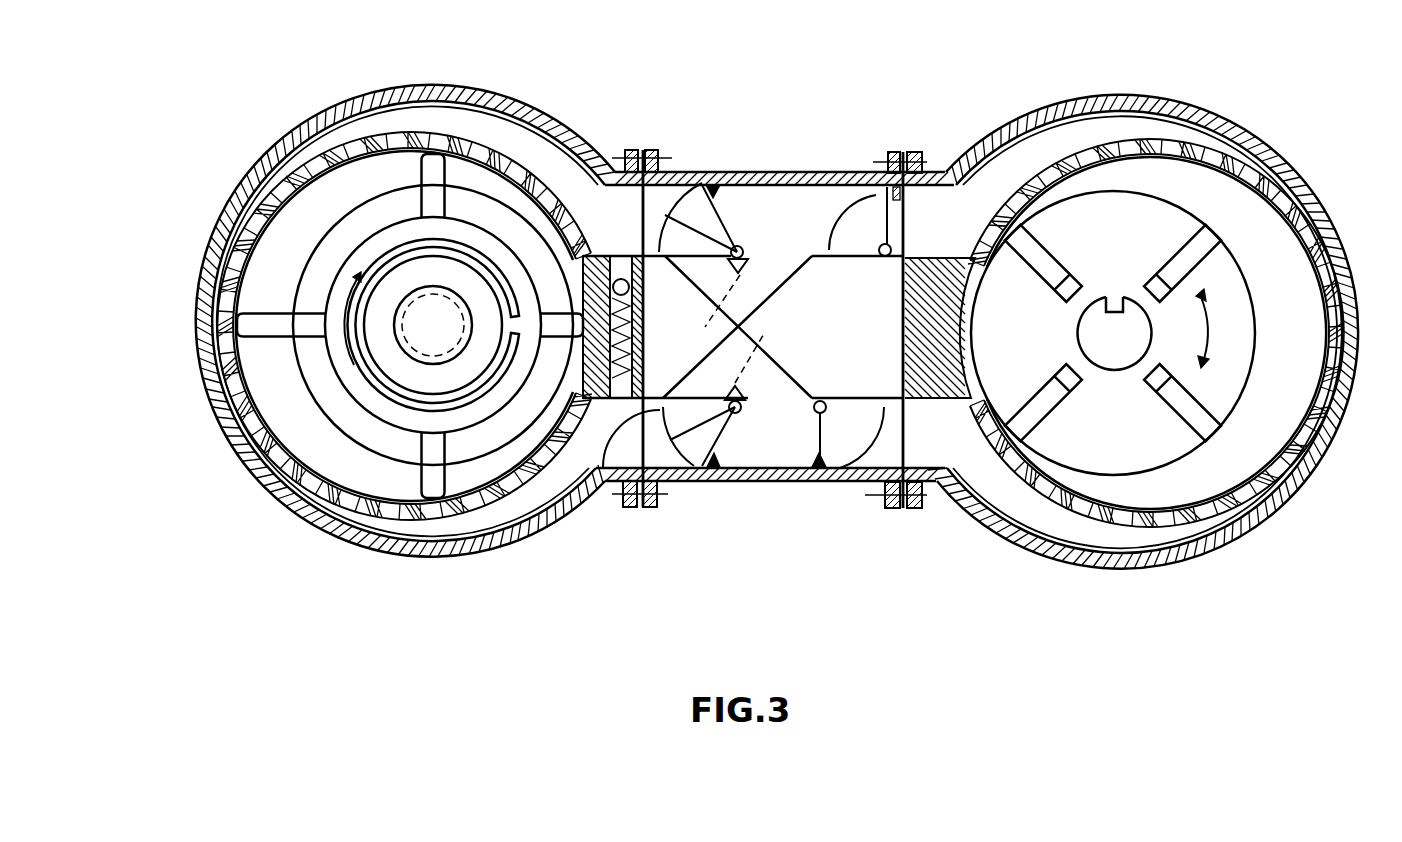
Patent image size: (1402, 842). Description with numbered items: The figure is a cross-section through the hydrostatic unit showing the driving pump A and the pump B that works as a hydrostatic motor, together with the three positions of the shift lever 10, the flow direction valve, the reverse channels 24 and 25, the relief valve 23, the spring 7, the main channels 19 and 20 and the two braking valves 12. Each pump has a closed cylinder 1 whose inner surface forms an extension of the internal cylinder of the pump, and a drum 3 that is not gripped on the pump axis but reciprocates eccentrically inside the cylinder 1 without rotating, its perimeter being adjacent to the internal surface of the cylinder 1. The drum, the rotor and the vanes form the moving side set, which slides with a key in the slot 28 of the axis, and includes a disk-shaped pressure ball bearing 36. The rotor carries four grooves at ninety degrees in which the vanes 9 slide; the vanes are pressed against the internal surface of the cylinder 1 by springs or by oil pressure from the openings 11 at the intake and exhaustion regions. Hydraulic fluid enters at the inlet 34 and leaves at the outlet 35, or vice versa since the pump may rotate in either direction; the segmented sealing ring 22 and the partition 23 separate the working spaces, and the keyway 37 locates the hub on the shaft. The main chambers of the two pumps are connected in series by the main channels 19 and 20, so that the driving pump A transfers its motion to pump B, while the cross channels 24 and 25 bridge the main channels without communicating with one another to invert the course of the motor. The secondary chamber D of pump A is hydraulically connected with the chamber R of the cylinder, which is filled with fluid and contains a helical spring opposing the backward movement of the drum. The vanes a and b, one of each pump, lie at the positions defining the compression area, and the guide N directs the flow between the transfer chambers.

The closed cylinder 1 is at (227, 205).
The drum 3 is at (281, 228).
The spring 7 is at (380, 383).
The vane 9 is at (320, 383).
The shift lever 10 is at (739, 245).
The openings 11 is at (365, 104).
The braking valves 12 is at (862, 197).
The main channel 19 is at (780, 215).
The main channel 20 is at (775, 437).
The segmented sealing ring 22 is at (298, 135).
The relief valve 23 is at (602, 245).
The reverse channel 24 is at (724, 290).
The reverse channel 25 is at (770, 295).
The slot 28 is at (1097, 313).
The inlet 34 is at (982, 178).
The outlet 35 is at (565, 197).
The disk-shaped pressure ball bearing 36 is at (492, 262).
The keyway 37 is at (1117, 300).
The vane a is at (208, 300).
The vane b is at (1225, 222).
The driving pump A is at (418, 560).
The pump B is at (1190, 560).
The chamber D is at (657, 250).
The guide N is at (672, 250).
The chamber R is at (688, 245).